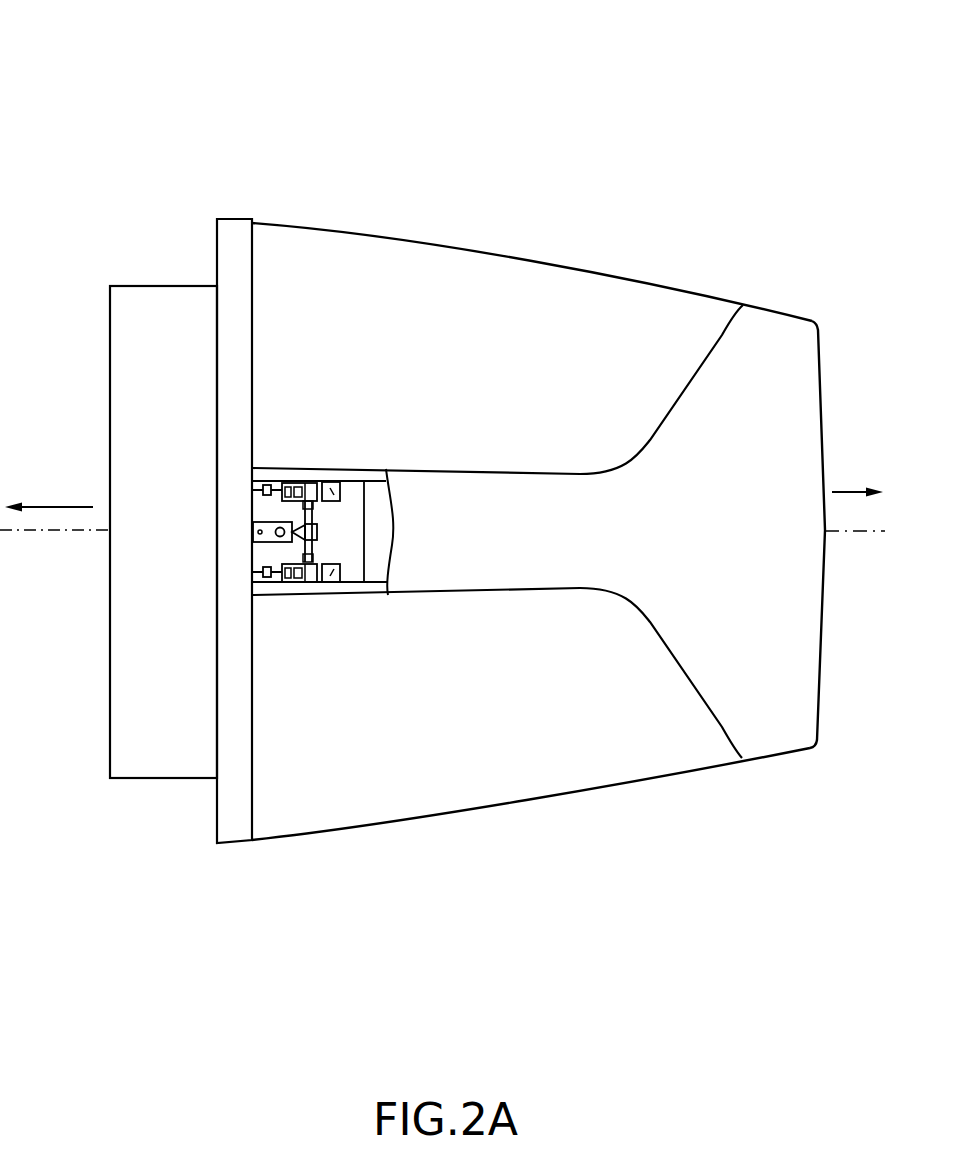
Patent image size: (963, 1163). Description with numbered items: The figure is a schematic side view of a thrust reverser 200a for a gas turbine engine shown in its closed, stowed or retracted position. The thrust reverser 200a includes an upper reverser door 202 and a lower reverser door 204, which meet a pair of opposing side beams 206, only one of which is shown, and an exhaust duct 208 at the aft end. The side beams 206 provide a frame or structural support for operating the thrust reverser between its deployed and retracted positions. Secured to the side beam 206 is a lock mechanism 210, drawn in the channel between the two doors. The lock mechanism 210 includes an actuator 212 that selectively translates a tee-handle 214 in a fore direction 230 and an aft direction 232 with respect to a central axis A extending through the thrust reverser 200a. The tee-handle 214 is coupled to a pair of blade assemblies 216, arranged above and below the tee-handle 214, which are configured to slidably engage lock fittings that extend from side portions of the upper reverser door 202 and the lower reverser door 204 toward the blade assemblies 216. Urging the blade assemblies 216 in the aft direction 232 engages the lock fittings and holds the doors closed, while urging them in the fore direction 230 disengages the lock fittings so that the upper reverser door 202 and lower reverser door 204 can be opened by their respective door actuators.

The thrust reverser 200a is at (121, 79).
The upper reverser door 202 is at (595, 272).
The lower reverser door 204 is at (618, 787).
The side beam 206 is at (522, 593).
The exhaust duct 208 is at (783, 748).
The lock mechanism 210 is at (307, 511).
The actuator 212 is at (257, 521).
The tee-handle 214 is at (310, 547).
The blade assembly 216 is at (307, 486).
The fore direction 230 is at (37, 505).
The aft direction 232 is at (850, 491).
The central axis A is at (853, 531).